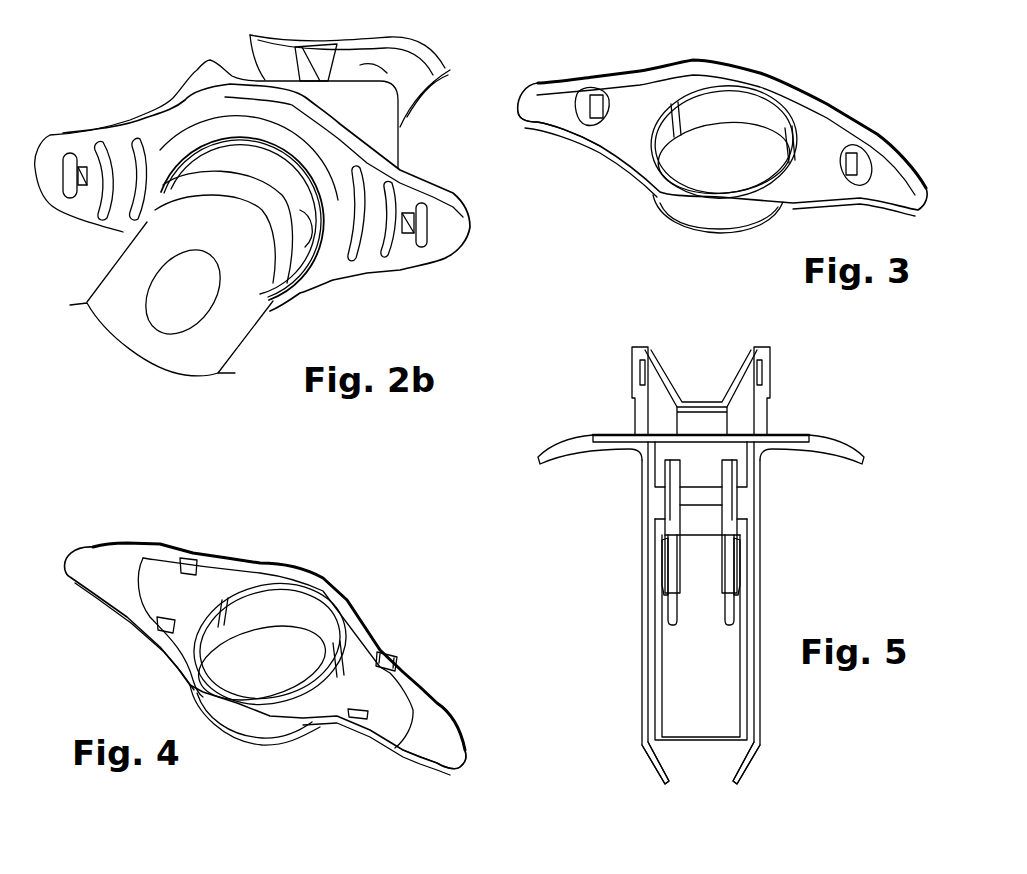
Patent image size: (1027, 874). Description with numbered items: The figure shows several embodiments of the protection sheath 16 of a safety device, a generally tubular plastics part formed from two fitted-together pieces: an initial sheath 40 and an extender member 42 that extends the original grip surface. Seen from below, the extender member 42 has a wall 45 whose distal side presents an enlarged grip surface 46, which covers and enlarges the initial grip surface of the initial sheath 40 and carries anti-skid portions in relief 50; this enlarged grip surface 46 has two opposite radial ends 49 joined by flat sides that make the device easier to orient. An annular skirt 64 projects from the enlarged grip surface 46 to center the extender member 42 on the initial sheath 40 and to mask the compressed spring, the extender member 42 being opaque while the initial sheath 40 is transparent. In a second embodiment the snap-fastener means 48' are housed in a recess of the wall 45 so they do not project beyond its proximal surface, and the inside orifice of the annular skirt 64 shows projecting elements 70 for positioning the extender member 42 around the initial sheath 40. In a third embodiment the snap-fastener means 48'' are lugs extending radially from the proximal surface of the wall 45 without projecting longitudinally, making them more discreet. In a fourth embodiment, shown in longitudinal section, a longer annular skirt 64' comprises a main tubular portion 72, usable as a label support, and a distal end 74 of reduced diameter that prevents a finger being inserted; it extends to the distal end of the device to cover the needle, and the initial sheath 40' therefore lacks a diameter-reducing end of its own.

In FIG. 5, the protection sheath 16 is at (800, 571).
In FIG. 2B, the initial sheath 40 is at (155, 299).
In FIG. 5, the initial sheath 40' is at (746, 631).
In FIG. 3, the extender member 42 is at (617, 173).
In FIG. 4, the extender member 42 is at (333, 754).
In FIG. 5, the extender member 42 is at (627, 703).
In FIG. 3, the wall 45 is at (557, 130).
In FIG. 4, the wall 45 is at (440, 733).
In FIG. 2B, the enlarged grip surface 46 is at (83, 166).
In FIG. 3, the snap-fastener means 48' is at (582, 77).
In FIG. 4, the snap-fastener means 48'' is at (407, 634).
In FIG. 2B, the radial ends 49 is at (463, 187).
In FIG. 2B, the anti-skid portions in relief 50 is at (420, 247).
In FIG. 2B, the annular skirt 64 is at (254, 237).
In FIG. 3, the annular skirt 64 is at (724, 115).
In FIG. 4, the annular skirt 64 is at (269, 622).
In FIG. 5, the annular skirt 64' is at (655, 580).
In FIG. 3, the projecting elements 70 is at (687, 107).
In FIG. 4, the projecting elements 70 is at (330, 643).
In FIG. 5, the main tubular portion 72 is at (642, 524).
In FIG. 5, the distal end 74 is at (652, 767).